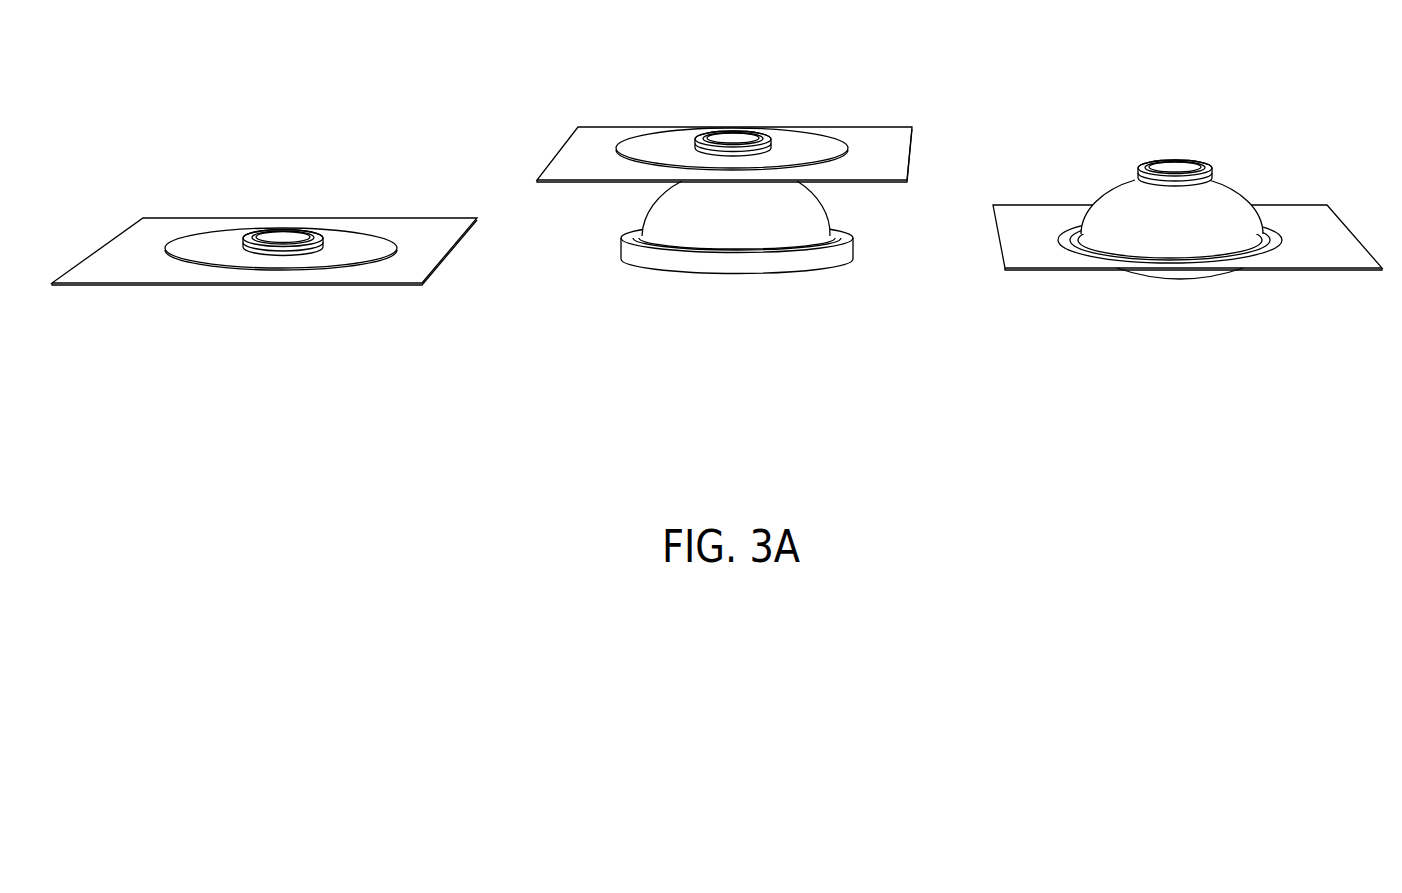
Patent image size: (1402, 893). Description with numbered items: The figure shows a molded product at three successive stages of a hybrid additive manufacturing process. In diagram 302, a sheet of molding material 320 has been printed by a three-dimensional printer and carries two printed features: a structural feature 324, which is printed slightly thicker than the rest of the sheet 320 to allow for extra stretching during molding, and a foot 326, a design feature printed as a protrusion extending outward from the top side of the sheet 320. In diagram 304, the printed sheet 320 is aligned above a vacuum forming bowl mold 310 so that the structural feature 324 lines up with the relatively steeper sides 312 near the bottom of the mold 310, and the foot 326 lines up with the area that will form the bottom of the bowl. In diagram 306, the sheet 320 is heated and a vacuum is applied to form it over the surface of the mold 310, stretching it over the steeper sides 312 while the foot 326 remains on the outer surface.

The diagram 302 is at (250, 268).
The diagram 304 is at (732, 250).
The diagram 306 is at (1225, 371).
The bowl mold 310 is at (632, 253).
The relatively steeper sides 312 is at (833, 220).
The sheet of molding material 320 is at (120, 202).
The structural feature 324 is at (387, 232).
The foot 326 is at (253, 228).